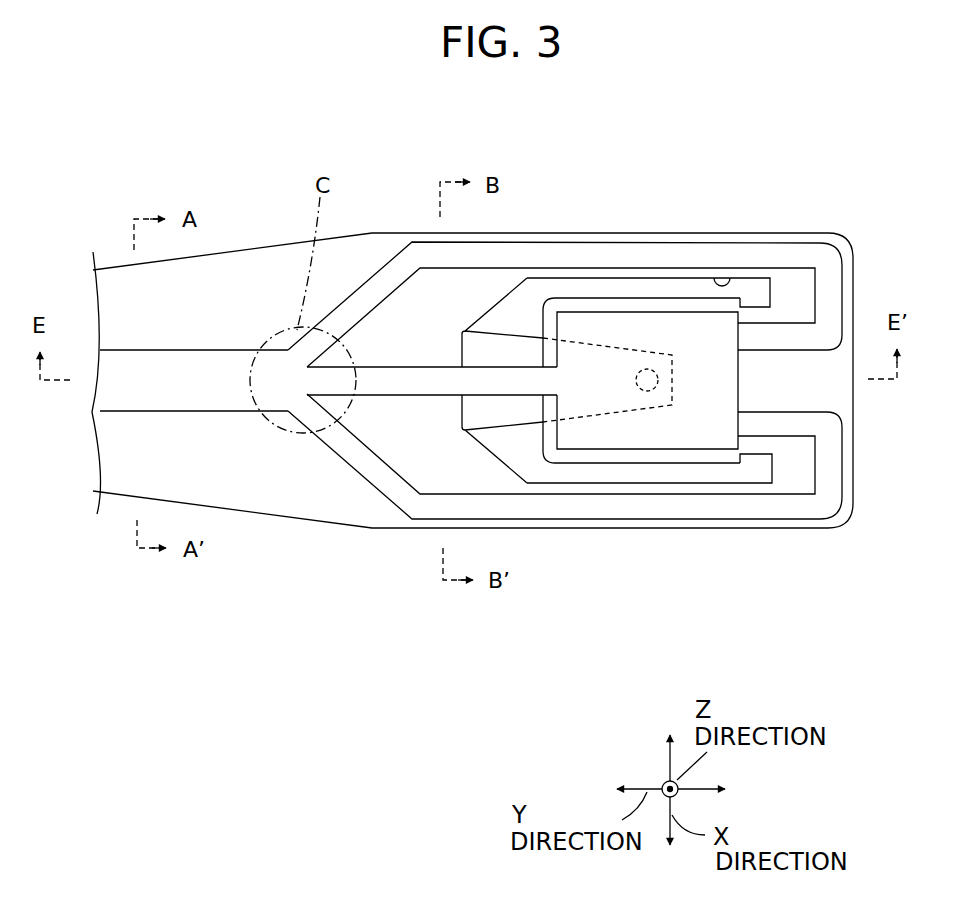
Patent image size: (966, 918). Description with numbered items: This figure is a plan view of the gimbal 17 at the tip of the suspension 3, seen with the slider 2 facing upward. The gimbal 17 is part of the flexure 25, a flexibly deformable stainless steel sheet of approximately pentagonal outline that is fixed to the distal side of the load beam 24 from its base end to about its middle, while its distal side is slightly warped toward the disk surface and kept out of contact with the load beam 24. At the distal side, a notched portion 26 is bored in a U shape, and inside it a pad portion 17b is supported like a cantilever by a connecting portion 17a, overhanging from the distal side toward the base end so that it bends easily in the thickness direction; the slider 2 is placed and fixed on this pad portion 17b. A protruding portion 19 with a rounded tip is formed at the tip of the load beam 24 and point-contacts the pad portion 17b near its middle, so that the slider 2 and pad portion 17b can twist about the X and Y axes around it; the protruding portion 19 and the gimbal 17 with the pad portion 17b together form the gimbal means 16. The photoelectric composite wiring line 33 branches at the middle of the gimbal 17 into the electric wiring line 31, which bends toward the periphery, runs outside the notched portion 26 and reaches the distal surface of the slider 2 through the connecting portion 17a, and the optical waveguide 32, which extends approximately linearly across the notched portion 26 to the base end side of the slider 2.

The slider 2 is at (642, 330).
The suspension 3 is at (607, 380).
The gimbal means 16 is at (703, 468).
The gimbal 17 is at (245, 268).
The connecting portion 17a is at (818, 380).
The pad portion 17b is at (627, 455).
The protruding portion 19 is at (658, 380).
The load beam 24 is at (515, 347).
The flexure 25 is at (691, 231).
The notched portion 26 is at (728, 283).
The electric wiring line 31 is at (755, 505).
The optical waveguide 32 is at (505, 386).
The photoelectric composite wiring line 33 is at (224, 390).